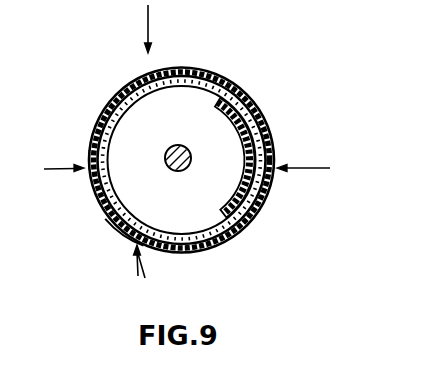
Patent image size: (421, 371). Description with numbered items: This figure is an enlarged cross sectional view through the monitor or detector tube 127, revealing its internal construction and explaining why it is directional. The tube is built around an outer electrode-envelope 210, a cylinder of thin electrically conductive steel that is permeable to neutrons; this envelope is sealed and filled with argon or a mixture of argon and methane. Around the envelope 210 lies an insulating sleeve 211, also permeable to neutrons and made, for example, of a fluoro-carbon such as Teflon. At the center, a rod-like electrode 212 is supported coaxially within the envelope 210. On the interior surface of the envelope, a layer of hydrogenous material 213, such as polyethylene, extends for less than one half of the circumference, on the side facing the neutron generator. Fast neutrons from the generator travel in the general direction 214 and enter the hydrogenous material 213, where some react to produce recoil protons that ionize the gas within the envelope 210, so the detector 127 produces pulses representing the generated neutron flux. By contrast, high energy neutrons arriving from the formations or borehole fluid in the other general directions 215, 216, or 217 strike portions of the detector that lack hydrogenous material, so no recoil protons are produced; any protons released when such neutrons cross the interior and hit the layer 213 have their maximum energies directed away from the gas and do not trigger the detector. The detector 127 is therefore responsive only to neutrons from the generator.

The monitor or detector tube 127 is at (108, 231).
The outer electrode-envelope 210 is at (140, 94).
The insulating sleeve 211 is at (218, 80).
The electrode 212 is at (177, 172).
The layer of hydrogenous material 213 is at (241, 131).
The direction of neutrons from generator 214 is at (328, 168).
The direction of formation or borehole neutrons 215 is at (146, 22).
The direction of formation or borehole neutrons 216 is at (44, 165).
The direction of formation or borehole neutrons 217 is at (142, 270).